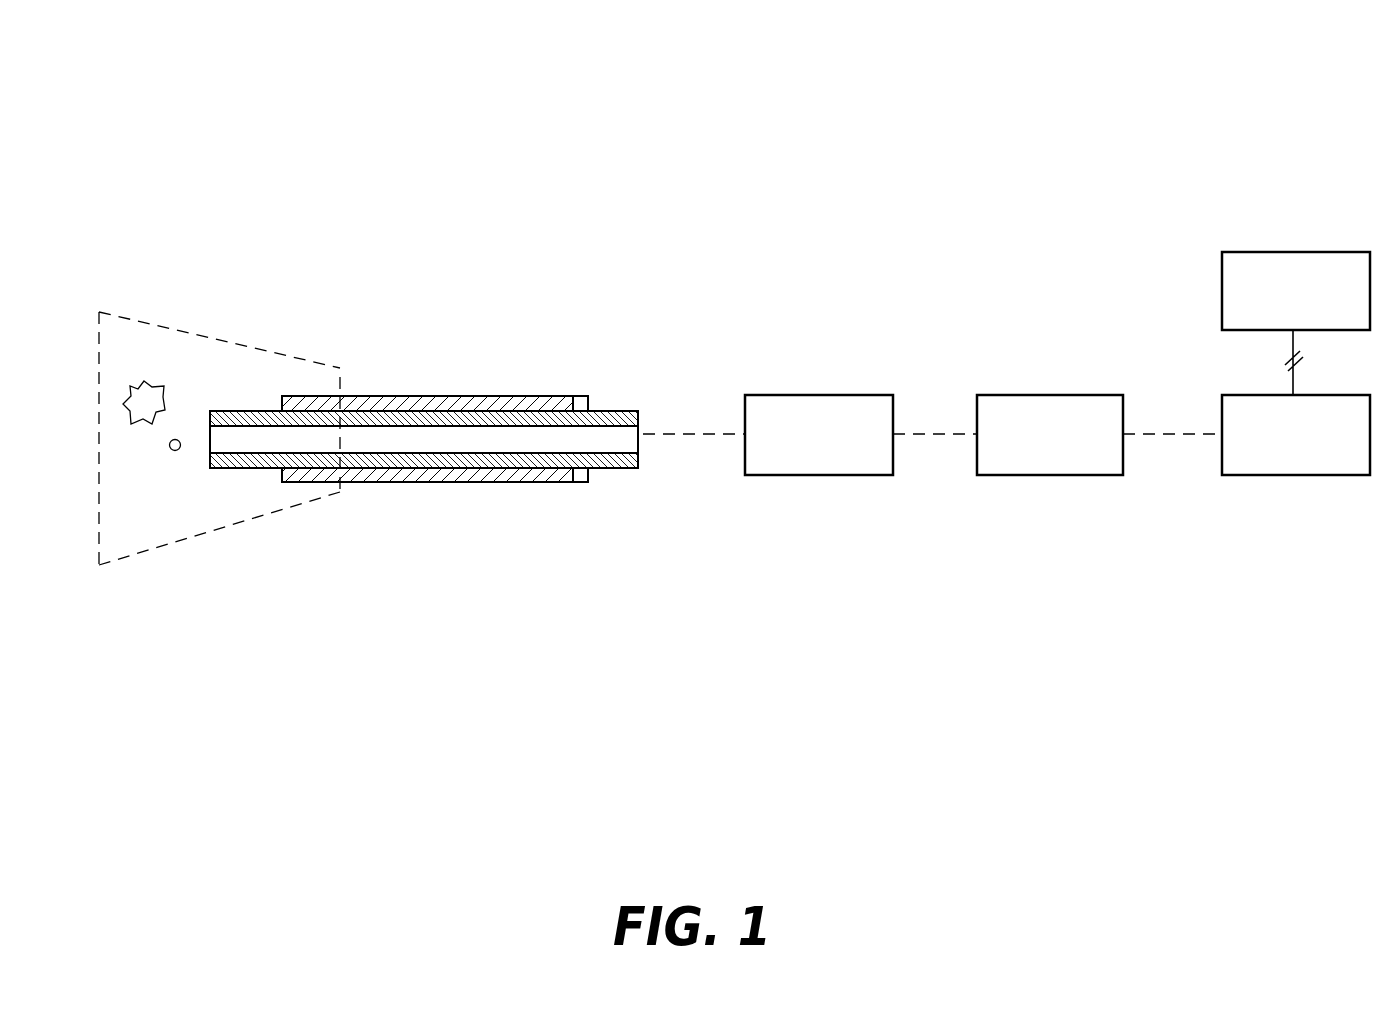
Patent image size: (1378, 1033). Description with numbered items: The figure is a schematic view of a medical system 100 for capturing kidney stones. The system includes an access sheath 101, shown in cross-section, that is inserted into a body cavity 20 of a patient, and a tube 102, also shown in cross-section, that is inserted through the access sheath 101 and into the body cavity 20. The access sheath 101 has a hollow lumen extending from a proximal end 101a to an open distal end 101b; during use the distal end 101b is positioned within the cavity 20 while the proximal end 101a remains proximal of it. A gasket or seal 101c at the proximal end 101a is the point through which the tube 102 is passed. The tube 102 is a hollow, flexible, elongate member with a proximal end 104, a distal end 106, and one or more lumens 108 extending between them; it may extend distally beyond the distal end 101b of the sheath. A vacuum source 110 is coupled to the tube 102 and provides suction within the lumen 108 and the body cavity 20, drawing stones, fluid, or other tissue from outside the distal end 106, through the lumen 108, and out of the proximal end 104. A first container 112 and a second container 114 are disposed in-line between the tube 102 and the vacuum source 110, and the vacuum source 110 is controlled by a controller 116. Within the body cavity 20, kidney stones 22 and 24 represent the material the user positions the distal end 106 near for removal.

The medical system 100 is at (322, 102).
The body cavity 20 is at (122, 556).
The kidney stone 22 is at (171, 450).
The kidney stone 24 is at (144, 381).
The access sheath 101 is at (448, 395).
The proximal end 101a is at (554, 375).
The distal end 101b is at (299, 380).
The seal 101c is at (583, 483).
The tube 102 is at (384, 482).
The proximal end 104 is at (608, 391).
The distal end 106 is at (224, 396).
The lumen 108 is at (277, 447).
The vacuum source 110 is at (1289, 476).
The first container 112 is at (812, 476).
The second container 114 is at (1042, 476).
The controller 116 is at (1298, 251).